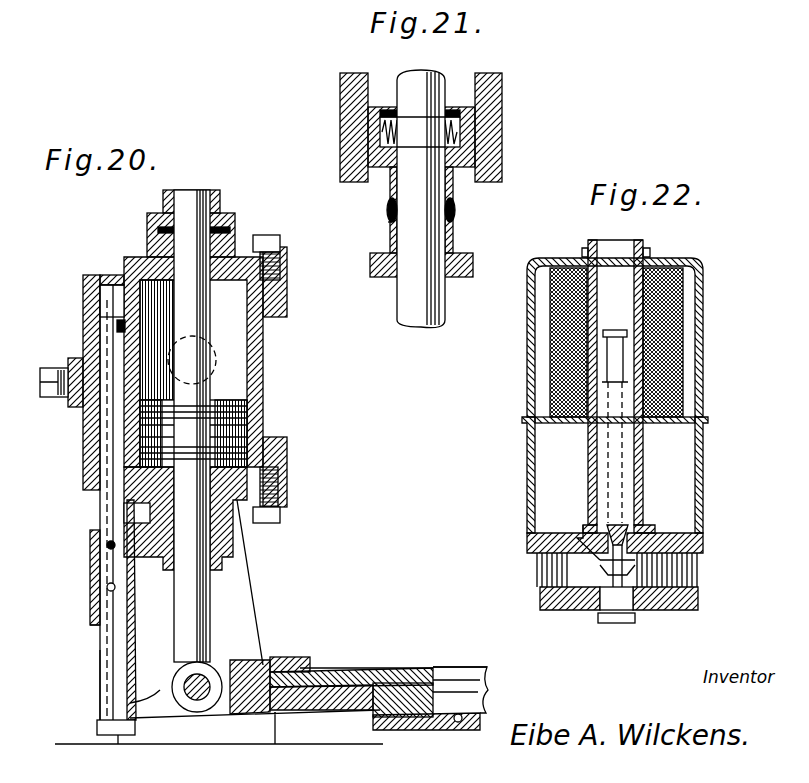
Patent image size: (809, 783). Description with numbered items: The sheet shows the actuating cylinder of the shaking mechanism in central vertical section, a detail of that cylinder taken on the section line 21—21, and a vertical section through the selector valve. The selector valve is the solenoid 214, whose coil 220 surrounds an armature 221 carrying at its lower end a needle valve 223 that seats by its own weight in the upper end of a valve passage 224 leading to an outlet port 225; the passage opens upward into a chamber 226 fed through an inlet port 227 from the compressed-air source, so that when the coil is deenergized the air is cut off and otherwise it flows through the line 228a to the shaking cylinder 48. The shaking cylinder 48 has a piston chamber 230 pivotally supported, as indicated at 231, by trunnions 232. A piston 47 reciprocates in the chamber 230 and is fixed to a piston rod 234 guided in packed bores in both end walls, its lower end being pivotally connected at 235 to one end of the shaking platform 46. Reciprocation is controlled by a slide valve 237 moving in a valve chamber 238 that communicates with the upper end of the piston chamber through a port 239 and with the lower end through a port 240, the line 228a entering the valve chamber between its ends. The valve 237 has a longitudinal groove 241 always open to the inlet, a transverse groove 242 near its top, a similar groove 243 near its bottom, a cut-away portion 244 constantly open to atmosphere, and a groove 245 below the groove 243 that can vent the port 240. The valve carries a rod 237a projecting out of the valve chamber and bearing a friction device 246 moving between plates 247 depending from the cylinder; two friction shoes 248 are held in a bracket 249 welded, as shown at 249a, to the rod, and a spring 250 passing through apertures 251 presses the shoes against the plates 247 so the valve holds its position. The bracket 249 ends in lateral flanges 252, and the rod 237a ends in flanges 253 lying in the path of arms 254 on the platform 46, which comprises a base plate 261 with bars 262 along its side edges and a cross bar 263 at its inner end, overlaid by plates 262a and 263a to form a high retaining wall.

In FIG. 20, the section line 21 is at (112, 495).
In FIG. 20, the shaking platform 46 is at (403, 668).
In FIG. 20, the piston 47 is at (250, 420).
In FIG. 20, the shaking cylinder 48 is at (233, 255).
In FIG. 22, the solenoid 214 is at (548, 312).
In FIG. 22, the coil 220 is at (685, 362).
In FIG. 22, the armature 221 is at (627, 487).
In FIG. 22, the needle valve 223 is at (637, 528).
In FIG. 22, the valve passage 224 is at (622, 567).
In FIG. 22, the outlet port 225 is at (650, 583).
In FIG. 22, the chamber 226 is at (600, 540).
In FIG. 22, the inlet port 227 is at (543, 583).
In FIG. 20, the line 228a is at (63, 372).
In FIG. 20, the piston chamber 230 is at (250, 330).
In FIG. 20, the pivotal support 231 is at (208, 378).
In FIG. 20, the trunnions 232 is at (240, 612).
In FIG. 20, the piston rod 234 is at (195, 580).
In FIG. 20, the pivotal connection 235 is at (205, 700).
In FIG. 20, the slide valve 237 is at (117, 322).
In FIG. 20, the valve rod 237a is at (125, 700).
In FIG. 21, the valve rod 237a is at (410, 298).
In FIG. 20, the valve chamber 238 is at (107, 322).
In FIG. 20, the upper piston chamber port 239 is at (138, 257).
In FIG. 20, the lower piston chamber port 240 is at (138, 468).
In FIG. 20, the longitudinal groove 241 is at (100, 414).
In FIG. 20, the transverse groove 242 is at (108, 290).
In FIG. 20, the lower groove 243 is at (100, 467).
In FIG. 20, the cut-away portion 244 is at (122, 278).
In FIG. 20, the groove 245 is at (130, 512).
In FIG. 21, the friction device 246 is at (455, 235).
In FIG. 20, the plates 247 is at (93, 535).
In FIG. 21, the plates 247 is at (340, 125).
In FIG. 20, the friction shoes 248 is at (108, 655).
In FIG. 21, the friction shoes 248 is at (388, 112).
In FIG. 20, the bracket 249 is at (107, 590).
In FIG. 21, the bracket 249 is at (392, 180).
In FIG. 21, the welding 249a is at (388, 215).
In FIG. 20, the spring 250 is at (108, 548).
In FIG. 21, the spring 250 is at (440, 117).
In FIG. 21, the apertures 251 is at (500, 166).
In FIG. 20, the lateral flanges 252 is at (92, 624).
In FIG. 21, the lateral flanges 252 is at (468, 257).
In FIG. 20, the laterally extending flanges 253 is at (97, 724).
In FIG. 20, the arms 254 is at (132, 703).
In FIG. 20, the base plate 261 is at (478, 722).
In FIG. 20, the bars 262 is at (452, 693).
In FIG. 20, the plates 262a is at (455, 668).
In FIG. 20, the cross bar 263 is at (390, 702).
In FIG. 20, the plate 263a is at (378, 647).